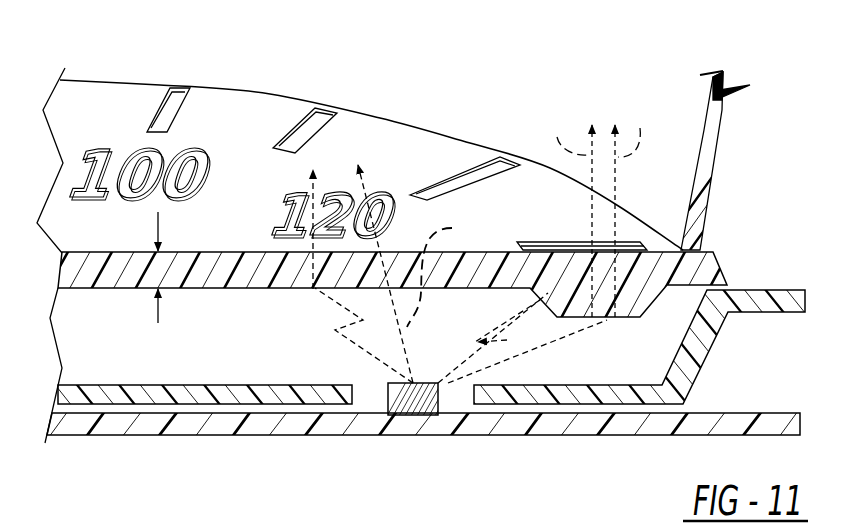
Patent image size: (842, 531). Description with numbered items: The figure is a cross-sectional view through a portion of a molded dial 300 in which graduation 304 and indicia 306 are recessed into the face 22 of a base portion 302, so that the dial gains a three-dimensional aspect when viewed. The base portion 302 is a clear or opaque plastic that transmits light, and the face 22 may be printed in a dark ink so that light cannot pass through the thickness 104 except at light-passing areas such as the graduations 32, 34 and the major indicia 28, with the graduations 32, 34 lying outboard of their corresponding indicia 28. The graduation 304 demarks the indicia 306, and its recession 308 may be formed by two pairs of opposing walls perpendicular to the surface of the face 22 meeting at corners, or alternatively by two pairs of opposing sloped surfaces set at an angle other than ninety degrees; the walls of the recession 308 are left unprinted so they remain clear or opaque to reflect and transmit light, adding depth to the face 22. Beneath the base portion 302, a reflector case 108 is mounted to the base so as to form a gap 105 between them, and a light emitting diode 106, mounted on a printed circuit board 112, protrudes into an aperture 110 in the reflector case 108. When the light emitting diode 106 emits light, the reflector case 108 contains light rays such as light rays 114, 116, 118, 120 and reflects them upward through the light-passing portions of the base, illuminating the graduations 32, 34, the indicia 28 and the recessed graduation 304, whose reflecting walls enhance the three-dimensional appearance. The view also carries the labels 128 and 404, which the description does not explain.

The face 22 is at (225, 229).
The major indicia 28 is at (97, 148).
The graduation 32 is at (288, 127).
The graduation 34 is at (186, 97).
The thickness 104 is at (183, 289).
The gap 105 is at (110, 359).
The light emitting diode 106 is at (440, 397).
The reflector case 108 is at (713, 347).
The aperture 110 is at (353, 393).
The printed circuit board 112 is at (552, 435).
The light ray 114 is at (378, 357).
The light ray 116 is at (444, 270).
The light ray 118 is at (564, 213).
The light ray 120 is at (645, 207).
The bottom surface of light guide 128 is at (258, 289).
The molded dial 300 is at (684, 40).
The base portion 302 is at (63, 268).
The graduation 304 is at (650, 250).
The indicia 306 is at (398, 168).
The recession 308 is at (634, 264).
The unknown 404 is at (257, 522).